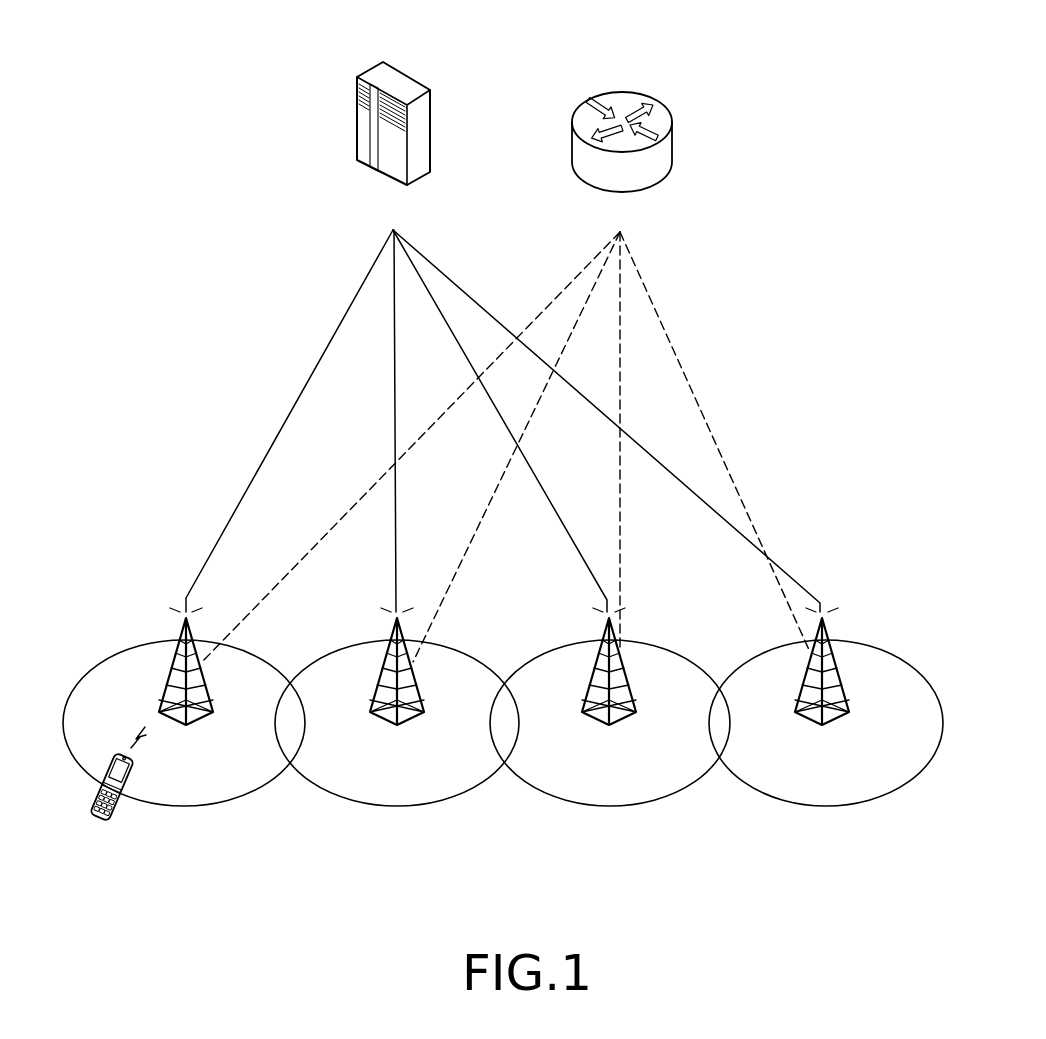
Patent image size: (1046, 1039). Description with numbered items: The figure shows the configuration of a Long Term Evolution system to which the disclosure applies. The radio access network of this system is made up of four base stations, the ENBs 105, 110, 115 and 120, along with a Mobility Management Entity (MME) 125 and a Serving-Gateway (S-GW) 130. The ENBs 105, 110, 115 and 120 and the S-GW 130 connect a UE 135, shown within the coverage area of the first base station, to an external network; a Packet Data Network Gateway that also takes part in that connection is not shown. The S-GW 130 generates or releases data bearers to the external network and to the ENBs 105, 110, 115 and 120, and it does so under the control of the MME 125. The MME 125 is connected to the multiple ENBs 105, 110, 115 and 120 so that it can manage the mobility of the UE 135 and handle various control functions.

The ENB 105 is at (205, 688).
The ENB 110 is at (416, 688).
The ENB 115 is at (628, 688).
The ENB 120 is at (841, 688).
The Mobility Management Entity 125 is at (407, 72).
The Serving-Gateway 130 is at (623, 90).
The UE 135 is at (122, 805).